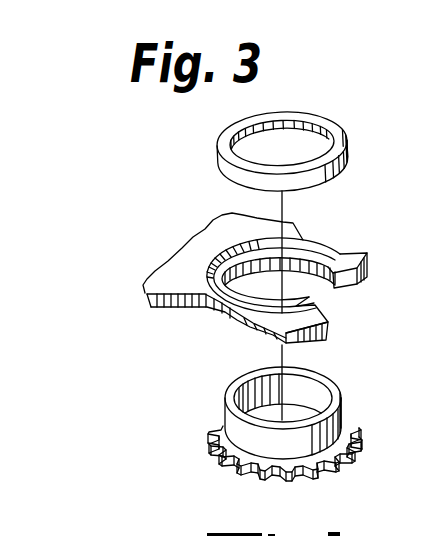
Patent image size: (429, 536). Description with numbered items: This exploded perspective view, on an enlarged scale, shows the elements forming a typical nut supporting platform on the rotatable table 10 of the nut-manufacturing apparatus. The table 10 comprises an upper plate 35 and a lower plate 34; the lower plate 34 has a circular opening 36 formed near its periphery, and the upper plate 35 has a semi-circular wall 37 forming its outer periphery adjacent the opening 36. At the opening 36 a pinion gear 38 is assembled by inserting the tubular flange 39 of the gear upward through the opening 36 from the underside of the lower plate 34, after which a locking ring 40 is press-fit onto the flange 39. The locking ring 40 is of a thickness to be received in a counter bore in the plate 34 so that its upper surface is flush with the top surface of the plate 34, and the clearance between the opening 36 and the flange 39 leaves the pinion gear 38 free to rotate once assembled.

The table 10 is at (187, 278).
The lower plate 34 is at (320, 337).
The upper plate 35 is at (215, 237).
The circular opening 36 is at (320, 293).
The semi-circular wall 37 is at (295, 244).
The pinion gear 38 is at (345, 412).
The tubular flange 39 is at (345, 393).
The locking ring 40 is at (336, 135).